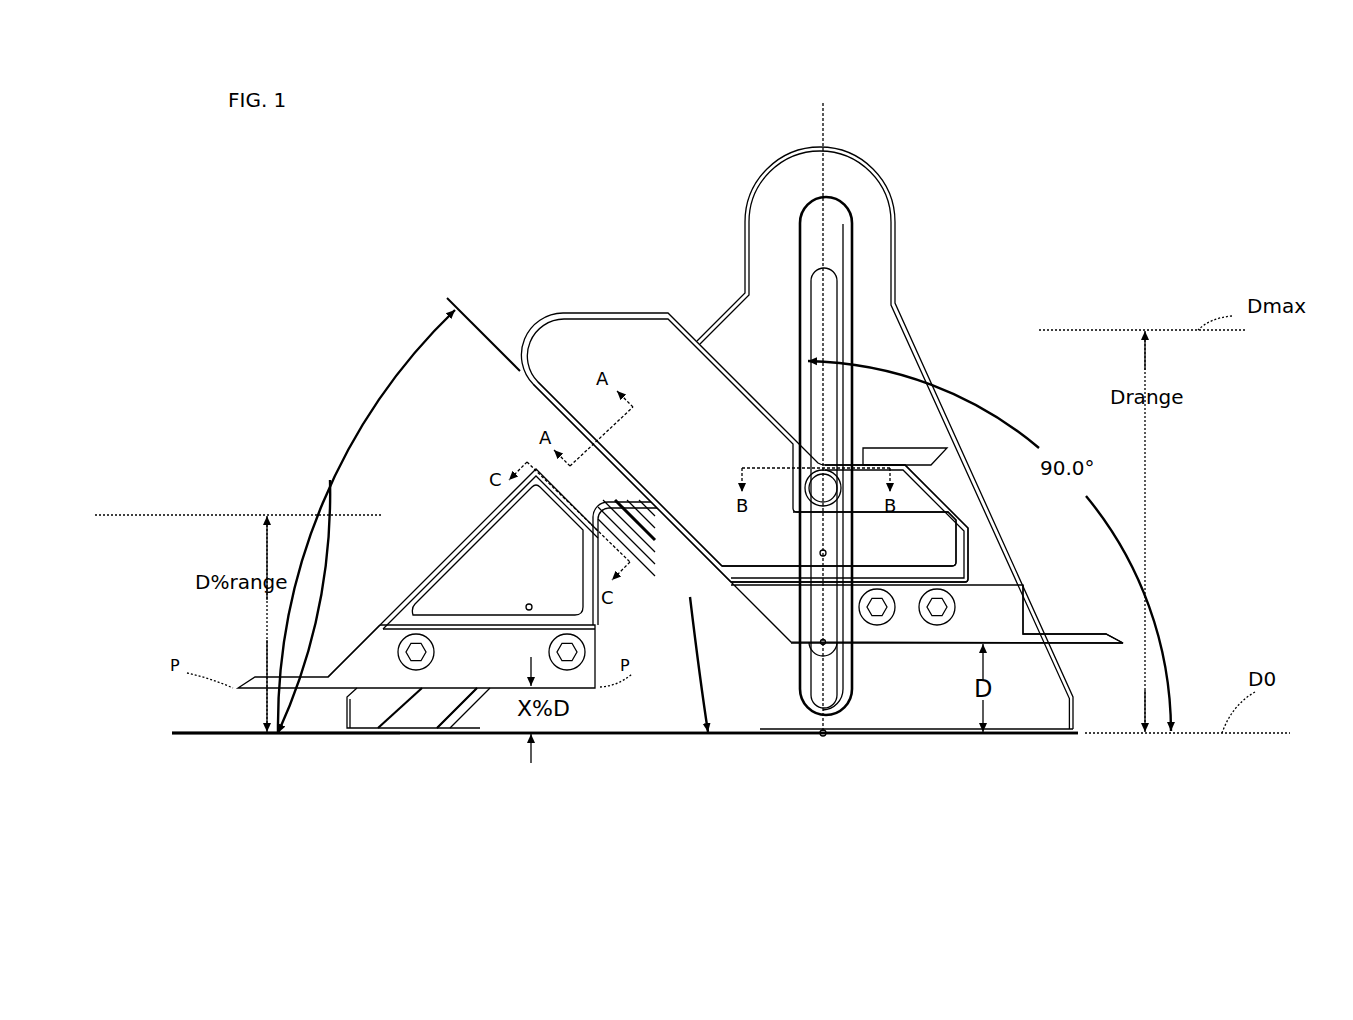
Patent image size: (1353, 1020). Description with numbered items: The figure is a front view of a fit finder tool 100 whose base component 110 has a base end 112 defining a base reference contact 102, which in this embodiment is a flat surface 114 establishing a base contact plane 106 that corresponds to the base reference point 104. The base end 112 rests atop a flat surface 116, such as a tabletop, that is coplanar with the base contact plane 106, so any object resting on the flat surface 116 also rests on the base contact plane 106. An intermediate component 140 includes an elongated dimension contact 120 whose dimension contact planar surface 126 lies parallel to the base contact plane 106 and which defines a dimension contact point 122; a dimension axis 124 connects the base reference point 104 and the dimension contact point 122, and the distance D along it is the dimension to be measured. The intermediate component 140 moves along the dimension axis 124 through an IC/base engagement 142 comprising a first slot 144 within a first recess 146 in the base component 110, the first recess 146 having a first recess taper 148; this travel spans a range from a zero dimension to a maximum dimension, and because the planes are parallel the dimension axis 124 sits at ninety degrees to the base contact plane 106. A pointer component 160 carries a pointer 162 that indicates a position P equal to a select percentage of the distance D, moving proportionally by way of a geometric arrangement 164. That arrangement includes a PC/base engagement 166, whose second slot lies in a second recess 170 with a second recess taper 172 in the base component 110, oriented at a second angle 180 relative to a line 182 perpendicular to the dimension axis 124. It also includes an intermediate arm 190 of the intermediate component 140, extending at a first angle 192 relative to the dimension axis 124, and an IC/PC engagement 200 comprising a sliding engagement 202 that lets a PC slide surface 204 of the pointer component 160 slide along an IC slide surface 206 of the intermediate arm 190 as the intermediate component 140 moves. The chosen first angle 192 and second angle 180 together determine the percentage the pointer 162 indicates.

The fit finder tool 100 is at (885, 433).
The base reference contact 102 is at (625, 758).
The base reference point 104 is at (823, 736).
The base contact plane 106 is at (625, 758).
The base component 110 is at (888, 333).
The base end 112 is at (1045, 695).
The flat surface 114 is at (935, 735).
The flat surface 116 is at (293, 732).
The dimension contact 120 is at (927, 630).
The dimension contact point 122 is at (822, 640).
The dimension axis 124 is at (826, 112).
The dimension contact planar surface 126 is at (866, 646).
The intermediate component 140 is at (845, 523).
The IC/base engagement 142 is at (863, 441).
The first slot 144 is at (828, 296).
The first recess 146 is at (828, 262).
The first recess taper 148 is at (848, 236).
The pointer component 160 is at (447, 578).
The pointer 162 is at (235, 670).
The geometric arrangement 164 is at (487, 277).
The PC/base engagement 166 is at (483, 505).
The second recess 170 is at (420, 722).
The second recess taper 172 is at (458, 715).
The second angle 180 is at (699, 664).
The line 182 is at (207, 738).
The intermediate arm 190 is at (744, 417).
The first angle 192 is at (275, 521).
The IC/PC engagement 200 is at (744, 447).
The sliding engagement 202 is at (744, 447).
The PC slide surface 204 is at (602, 458).
The IC slide surface 206 is at (637, 550).